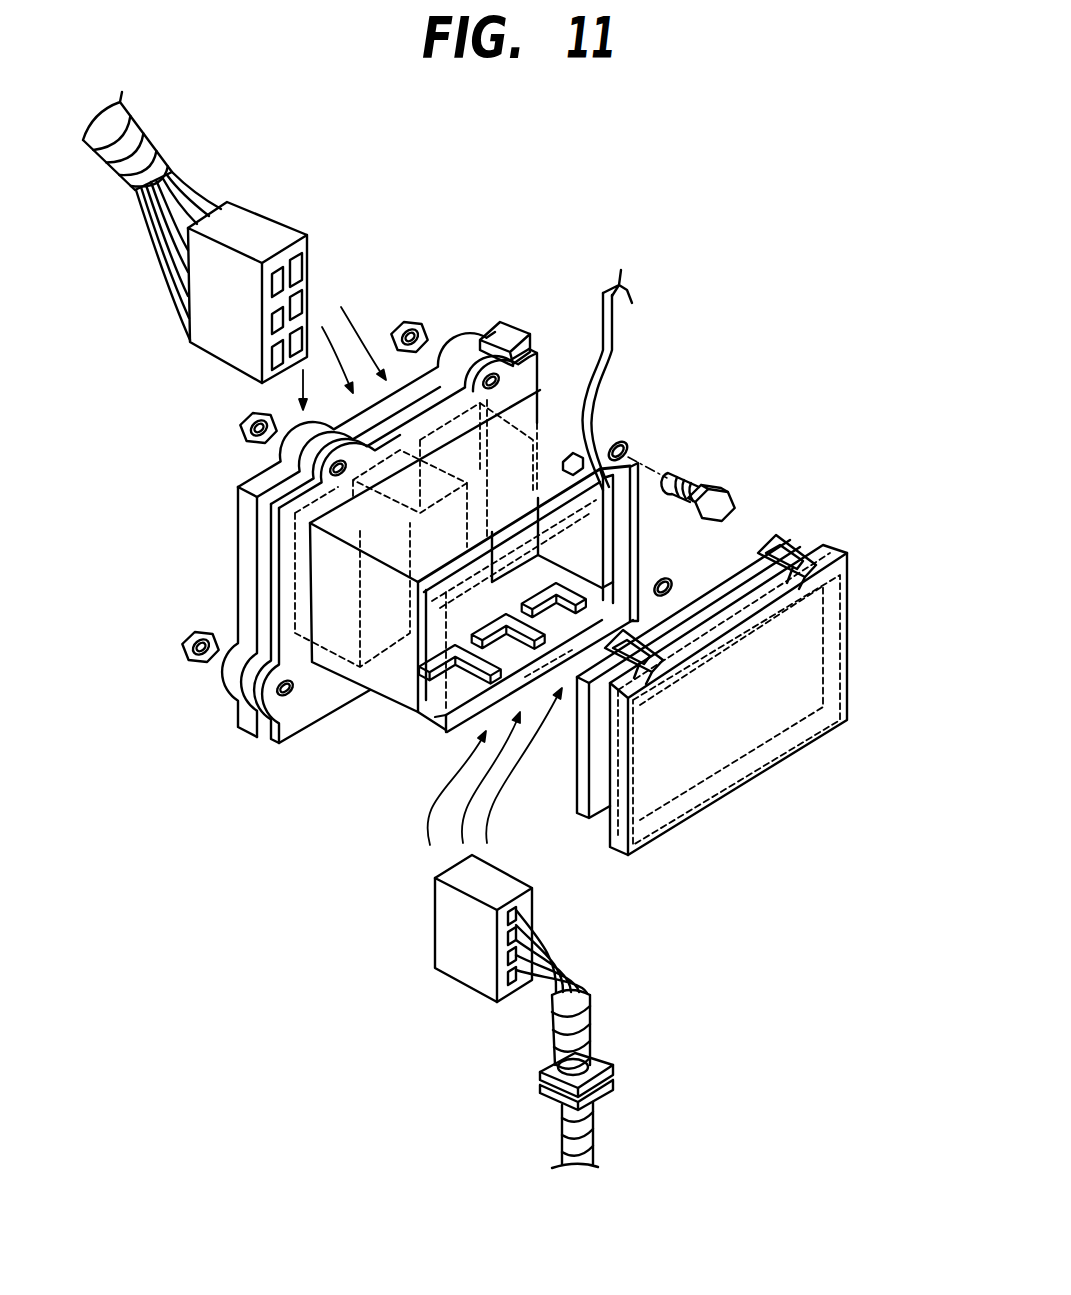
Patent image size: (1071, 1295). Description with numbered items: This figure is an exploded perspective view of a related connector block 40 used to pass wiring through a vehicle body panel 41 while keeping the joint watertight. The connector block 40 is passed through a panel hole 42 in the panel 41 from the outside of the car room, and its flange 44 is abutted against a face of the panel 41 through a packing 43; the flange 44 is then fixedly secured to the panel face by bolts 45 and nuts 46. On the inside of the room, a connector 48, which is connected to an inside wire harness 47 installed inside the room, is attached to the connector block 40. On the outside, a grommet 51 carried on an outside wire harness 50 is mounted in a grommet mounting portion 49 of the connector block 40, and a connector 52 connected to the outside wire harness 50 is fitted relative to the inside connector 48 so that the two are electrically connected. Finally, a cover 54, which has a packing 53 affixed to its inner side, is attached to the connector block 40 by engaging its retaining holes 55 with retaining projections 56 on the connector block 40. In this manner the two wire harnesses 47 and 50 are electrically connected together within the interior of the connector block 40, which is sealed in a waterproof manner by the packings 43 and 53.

The connector block 40 is at (540, 420).
The panel 41 is at (621, 276).
The panel hole 42 is at (435, 717).
The packing 43 is at (277, 740).
The flange 44 is at (246, 578).
The bolt 45 is at (725, 482).
The nut 46 is at (420, 313).
The inside wire harness 47 is at (145, 133).
The connector 48 is at (270, 225).
The grommet mounting portion 49 is at (485, 672).
The outside wire harness 50 is at (590, 1005).
The grommet 51 is at (613, 1083).
The connector 52 is at (447, 945).
The packing 53 is at (594, 820).
The cover 54 is at (813, 612).
The retaining hole 55 is at (795, 537).
The retaining projection 56 is at (592, 440).